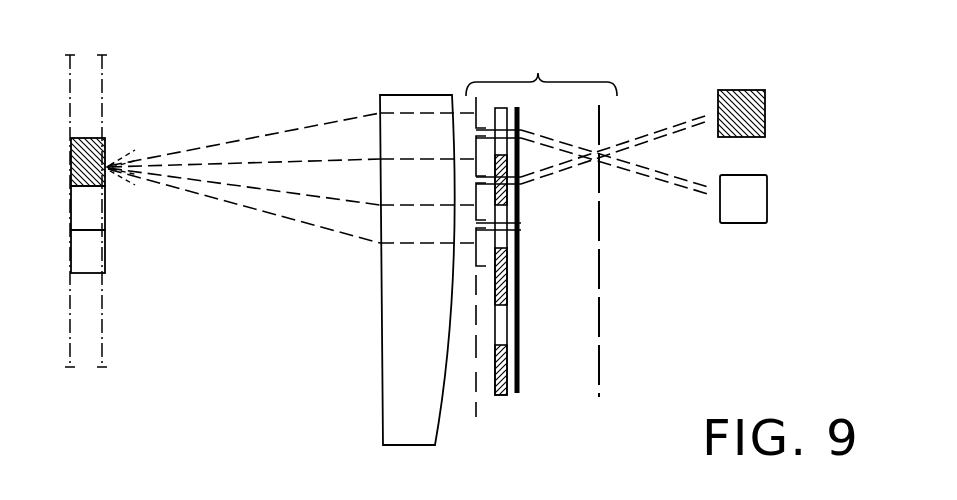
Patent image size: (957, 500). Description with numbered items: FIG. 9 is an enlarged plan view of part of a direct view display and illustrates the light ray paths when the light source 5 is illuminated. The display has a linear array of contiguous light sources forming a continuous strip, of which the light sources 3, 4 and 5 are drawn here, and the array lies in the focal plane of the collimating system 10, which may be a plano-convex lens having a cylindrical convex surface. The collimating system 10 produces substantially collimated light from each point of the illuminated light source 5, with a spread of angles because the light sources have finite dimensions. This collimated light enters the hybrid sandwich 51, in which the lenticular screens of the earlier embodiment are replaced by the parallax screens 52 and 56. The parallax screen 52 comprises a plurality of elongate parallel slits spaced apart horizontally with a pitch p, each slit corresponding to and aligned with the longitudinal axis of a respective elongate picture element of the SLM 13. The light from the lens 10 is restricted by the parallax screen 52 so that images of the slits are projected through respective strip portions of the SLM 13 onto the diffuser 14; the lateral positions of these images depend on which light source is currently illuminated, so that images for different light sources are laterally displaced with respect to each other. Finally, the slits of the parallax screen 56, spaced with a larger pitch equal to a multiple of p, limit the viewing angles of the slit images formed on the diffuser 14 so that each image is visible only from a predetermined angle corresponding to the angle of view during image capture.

The light source 3 is at (71, 248).
The light source 4 is at (105, 198).
The light source 5 is at (71, 162).
The collimating system 10 is at (402, 447).
The SLM 13 is at (503, 397).
The diffuser 14 is at (521, 394).
The hybrid sandwich 51 is at (538, 76).
The parallax screen 52 is at (476, 417).
The parallax screen 56 is at (600, 396).